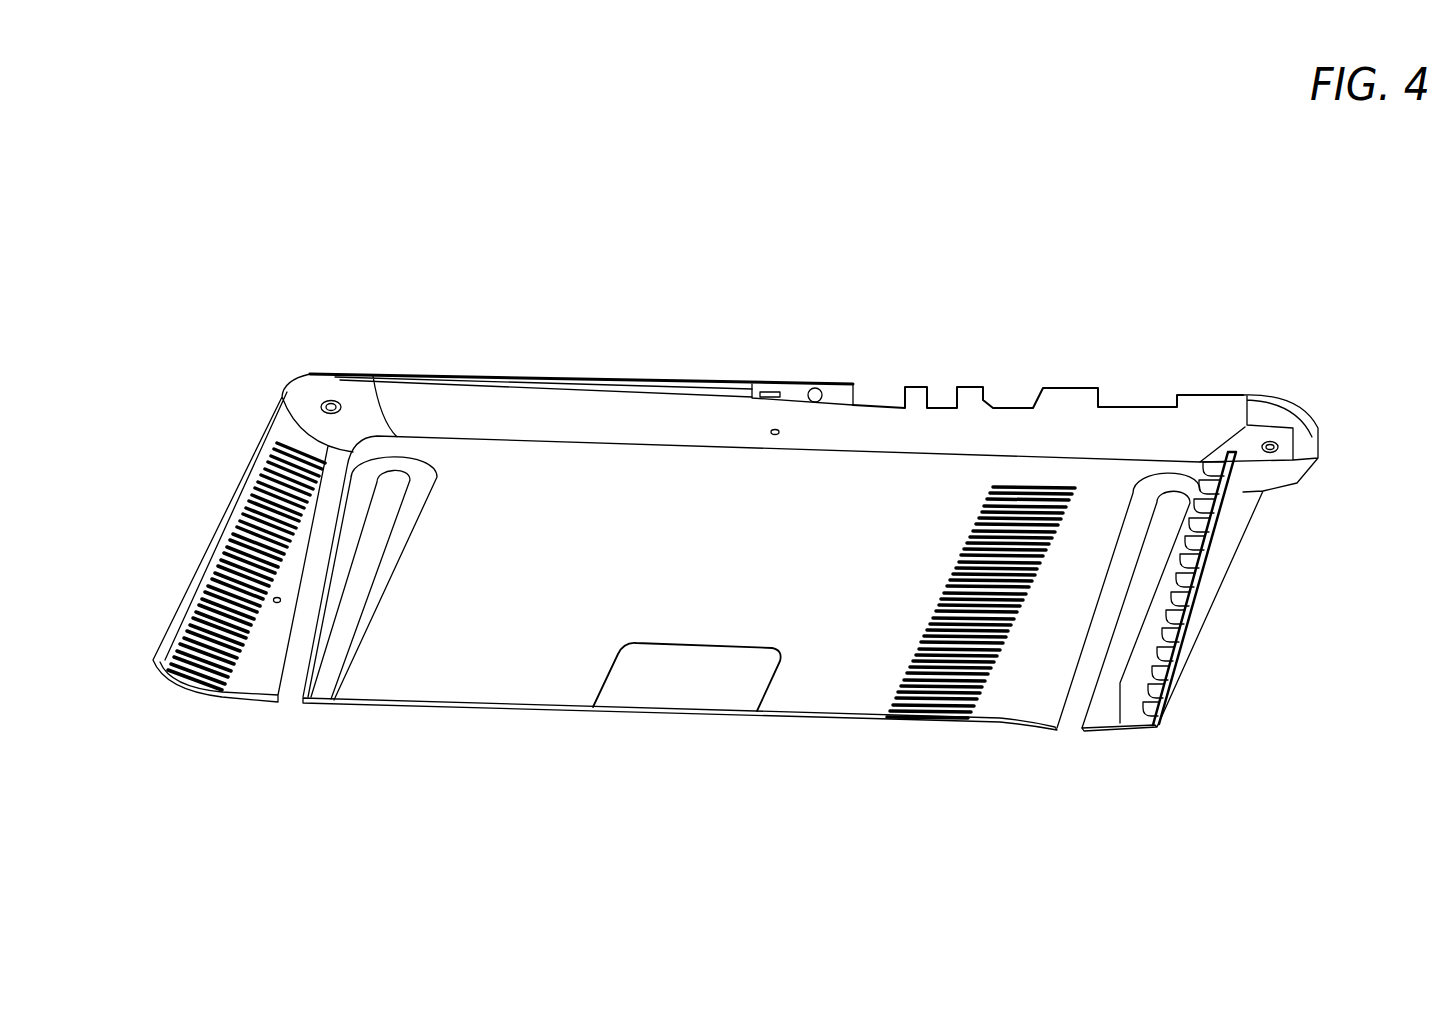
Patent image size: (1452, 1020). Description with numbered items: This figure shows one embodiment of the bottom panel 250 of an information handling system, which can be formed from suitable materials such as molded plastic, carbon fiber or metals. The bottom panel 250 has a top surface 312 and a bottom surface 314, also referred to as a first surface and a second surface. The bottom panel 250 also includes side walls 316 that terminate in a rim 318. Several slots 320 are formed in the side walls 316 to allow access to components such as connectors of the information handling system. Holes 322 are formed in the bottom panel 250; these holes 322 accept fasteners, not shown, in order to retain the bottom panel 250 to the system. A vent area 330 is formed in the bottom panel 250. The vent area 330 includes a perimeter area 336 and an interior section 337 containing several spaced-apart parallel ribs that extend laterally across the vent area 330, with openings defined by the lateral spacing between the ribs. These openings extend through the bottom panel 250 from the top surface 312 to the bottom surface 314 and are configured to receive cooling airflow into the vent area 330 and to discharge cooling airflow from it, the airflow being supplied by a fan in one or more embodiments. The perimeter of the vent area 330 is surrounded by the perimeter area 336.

The bottom panel 250 is at (634, 372).
The top surface 312 is at (523, 497).
The bottom surface 314 is at (462, 710).
The side walls 316 is at (753, 381).
The rim 318 is at (240, 478).
The slots 320 is at (1013, 400).
The holes 322 is at (320, 404).
The vent area 330 is at (935, 575).
The perimeter area 336 is at (957, 532).
The interior section 337 is at (947, 622).